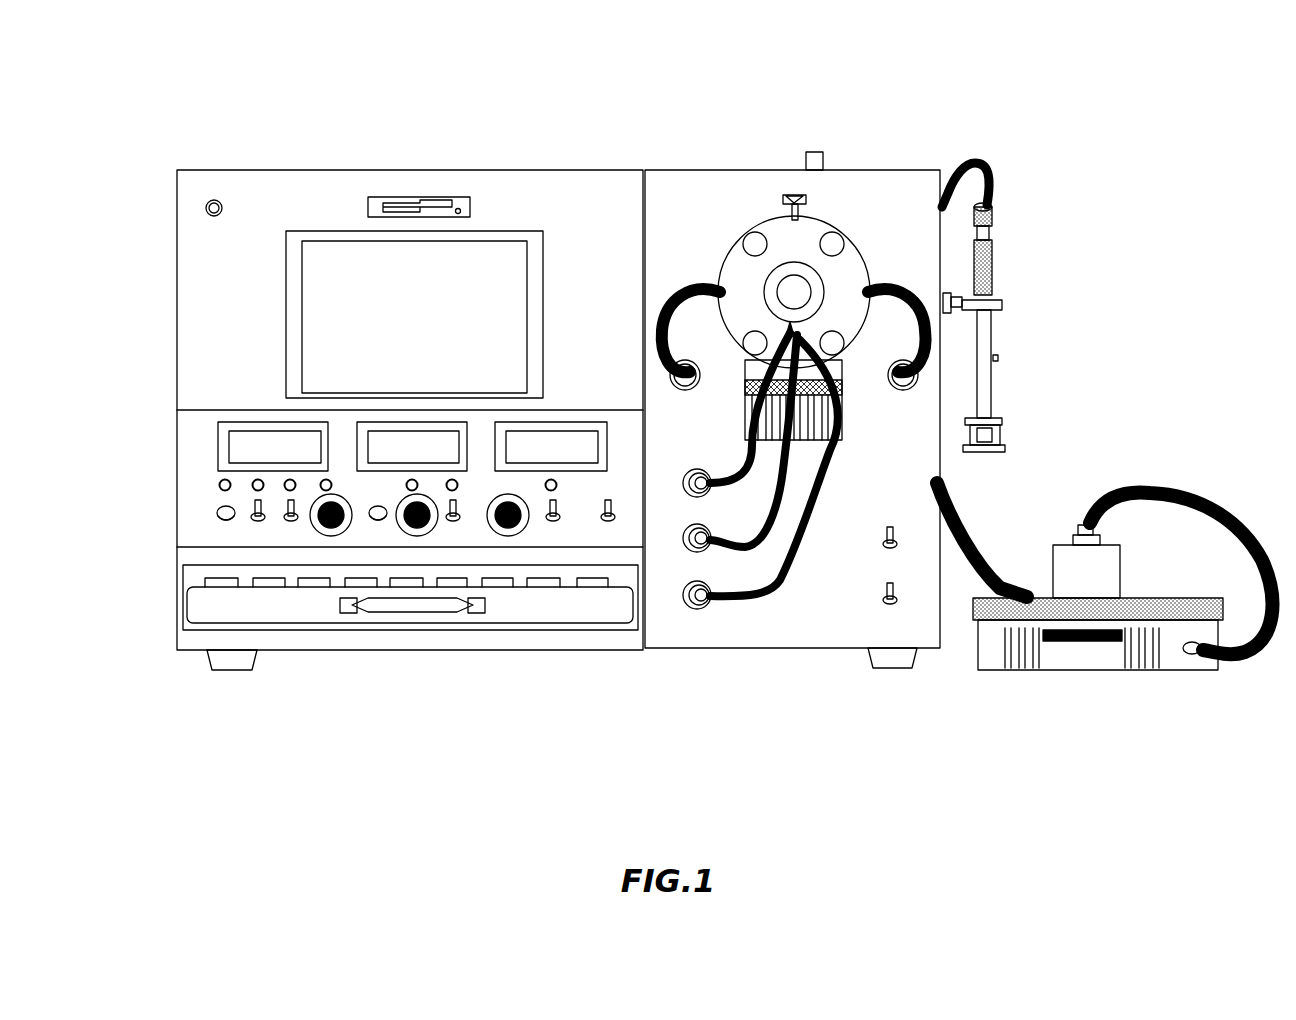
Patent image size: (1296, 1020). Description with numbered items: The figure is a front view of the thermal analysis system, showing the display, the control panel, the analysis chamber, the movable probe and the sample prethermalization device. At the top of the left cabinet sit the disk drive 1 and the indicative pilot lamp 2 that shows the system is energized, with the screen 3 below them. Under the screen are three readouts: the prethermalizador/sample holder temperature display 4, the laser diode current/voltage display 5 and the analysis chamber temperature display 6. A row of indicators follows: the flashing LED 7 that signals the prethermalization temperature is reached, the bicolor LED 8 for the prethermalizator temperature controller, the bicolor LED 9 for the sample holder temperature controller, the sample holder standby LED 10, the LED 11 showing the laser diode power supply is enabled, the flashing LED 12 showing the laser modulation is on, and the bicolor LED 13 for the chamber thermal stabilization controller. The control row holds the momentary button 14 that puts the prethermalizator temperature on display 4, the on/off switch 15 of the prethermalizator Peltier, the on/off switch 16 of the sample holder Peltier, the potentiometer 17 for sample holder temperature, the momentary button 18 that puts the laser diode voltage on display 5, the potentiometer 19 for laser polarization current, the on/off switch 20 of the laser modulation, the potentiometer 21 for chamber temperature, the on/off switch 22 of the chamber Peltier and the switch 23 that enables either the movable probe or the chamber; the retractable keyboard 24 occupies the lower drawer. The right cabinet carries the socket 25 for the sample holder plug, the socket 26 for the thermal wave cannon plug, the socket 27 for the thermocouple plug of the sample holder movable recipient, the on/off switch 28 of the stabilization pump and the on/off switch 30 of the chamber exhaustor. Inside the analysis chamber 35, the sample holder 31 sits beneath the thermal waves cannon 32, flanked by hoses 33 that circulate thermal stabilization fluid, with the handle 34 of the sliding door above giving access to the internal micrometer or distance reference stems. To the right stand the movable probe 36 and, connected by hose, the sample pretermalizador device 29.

The disk drive 1 is at (421, 192).
The indicative pilot lamp 2 is at (208, 207).
The screen 3 is at (414, 314).
The prethermalizador/sample holder temperature display 4 is at (273, 446).
The laser diode current/voltage display 5 is at (412, 446).
The analysis chamber temperature display 6 is at (551, 446).
The flashing LED 7 is at (218, 485).
The bicolor LED 8 is at (253, 482).
The bicolor LED 9 is at (285, 480).
The sample holder standby indicative LED 10 is at (326, 479).
The LED 11 is at (412, 479).
The flashing LED 12 is at (453, 479).
The bicolor LED 13 is at (553, 479).
The momentary button 14 is at (218, 518).
The on/off switch of the sample prethermalizator device's Peltier 15 is at (249, 523).
The on/off switch of the sample holder's Peltier 16 is at (284, 525).
The potentiometer 17 is at (332, 538).
The momentary button 18 is at (378, 529).
The potentiometer 19 is at (421, 538).
The on/off switch of the laser diode modulation 20 is at (457, 528).
The potentiometer 21 is at (511, 537).
The on/off switch of the analysis chamber's Peltier 22 is at (556, 528).
The switch 23 is at (611, 528).
The retractable keyboard 24 is at (318, 613).
The socket for the sample holder plug 25 is at (707, 614).
The socket for the thermal wave cannon plug 26 is at (712, 556).
The socket for the sample holder movable recipient thermocouple plug 27 is at (716, 500).
The on/off switch of the chamber's thermal stabilization pump 28 is at (897, 612).
The sample pretermalizador device 29 is at (1093, 600).
The on/off switch of the analysis chamber's exhaustor 30 is at (889, 519).
The sample holder 31 is at (860, 403).
The thermal waves cannon 32 is at (820, 298).
The hoses for circulation of thermal stabilization fluid 33 is at (714, 264).
The handle of the sliding door 34 is at (827, 142).
The analysis chamber 35 is at (832, 210).
The movable probe 36 is at (1006, 259).